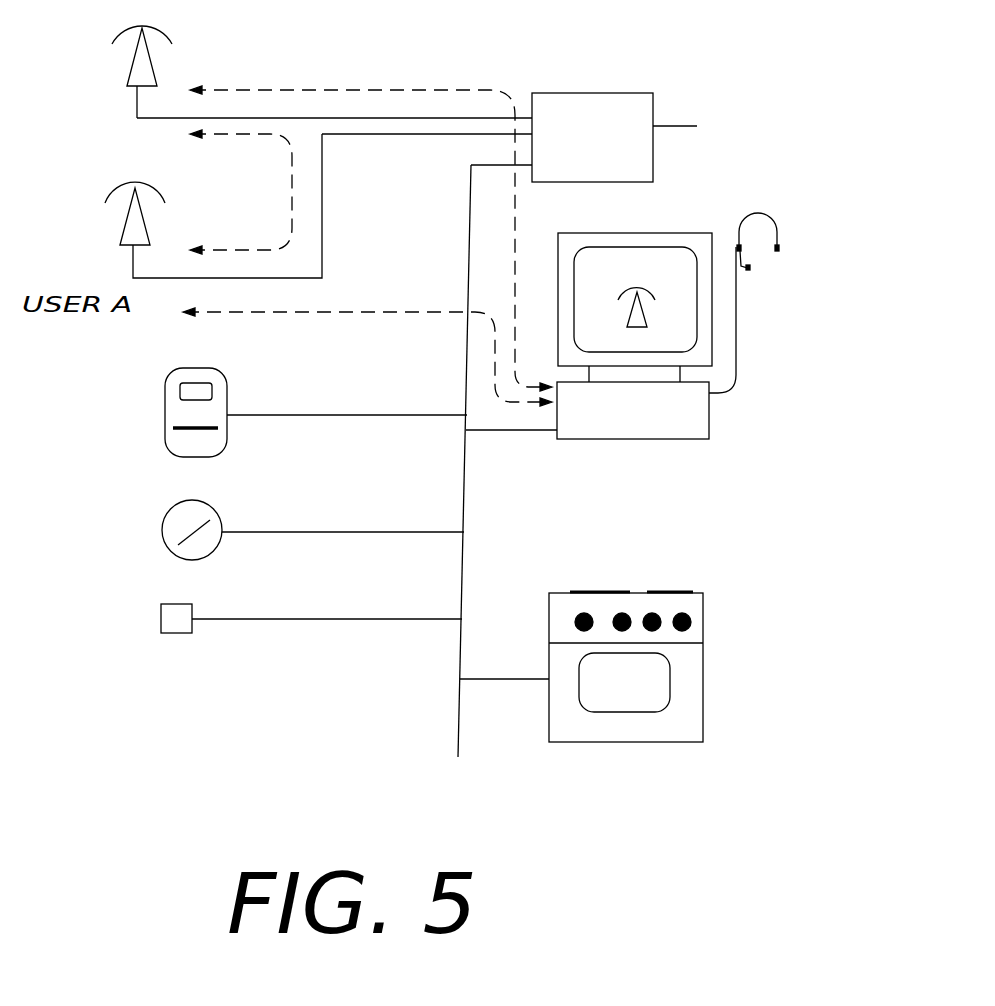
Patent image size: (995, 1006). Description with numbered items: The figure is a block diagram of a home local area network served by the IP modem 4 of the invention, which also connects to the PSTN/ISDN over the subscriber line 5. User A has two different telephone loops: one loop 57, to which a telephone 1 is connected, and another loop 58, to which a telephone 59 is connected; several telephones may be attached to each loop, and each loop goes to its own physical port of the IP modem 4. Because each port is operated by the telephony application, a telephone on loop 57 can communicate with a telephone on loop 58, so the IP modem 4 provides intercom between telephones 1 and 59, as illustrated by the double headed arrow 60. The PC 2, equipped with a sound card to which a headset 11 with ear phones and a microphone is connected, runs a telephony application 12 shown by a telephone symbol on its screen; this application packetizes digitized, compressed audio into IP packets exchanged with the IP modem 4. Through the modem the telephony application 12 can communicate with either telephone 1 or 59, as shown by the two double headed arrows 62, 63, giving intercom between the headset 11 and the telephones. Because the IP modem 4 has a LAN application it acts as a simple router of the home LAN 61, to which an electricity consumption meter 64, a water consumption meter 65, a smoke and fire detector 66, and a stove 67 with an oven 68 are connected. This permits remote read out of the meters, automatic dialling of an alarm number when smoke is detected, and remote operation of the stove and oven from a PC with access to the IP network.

The telephone 1 is at (123, 218).
The PC 2 is at (710, 428).
The IP modem 4 is at (578, 92).
The subscriber line 5 is at (665, 125).
The headset 11 is at (760, 212).
The telephony application 12 is at (637, 290).
The loop 57 is at (438, 136).
The loop 58 is at (240, 118).
The telephone 59 is at (128, 70).
The double headed arrow 60 is at (290, 215).
The home LAN 61 is at (462, 565).
The double headed arrow 62 is at (372, 312).
The double headed arrow 63 is at (397, 90).
The electricity consumption meter 64 is at (163, 430).
The water consumption meter 65 is at (168, 548).
The smoke and fire detector 66 is at (158, 622).
The stove 67 is at (705, 606).
The oven 68 is at (670, 700).